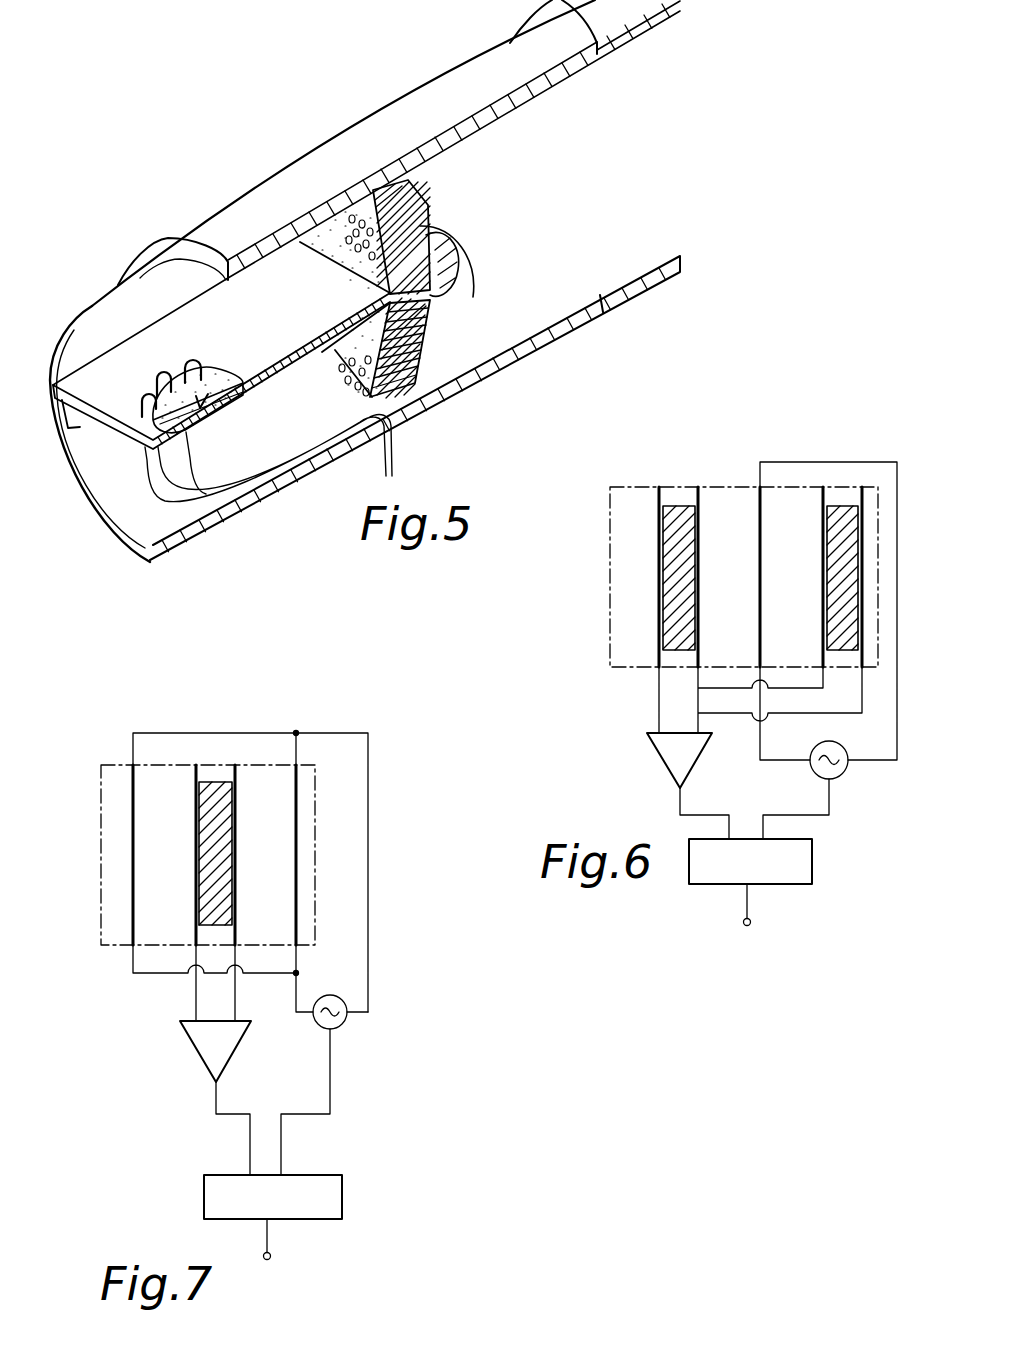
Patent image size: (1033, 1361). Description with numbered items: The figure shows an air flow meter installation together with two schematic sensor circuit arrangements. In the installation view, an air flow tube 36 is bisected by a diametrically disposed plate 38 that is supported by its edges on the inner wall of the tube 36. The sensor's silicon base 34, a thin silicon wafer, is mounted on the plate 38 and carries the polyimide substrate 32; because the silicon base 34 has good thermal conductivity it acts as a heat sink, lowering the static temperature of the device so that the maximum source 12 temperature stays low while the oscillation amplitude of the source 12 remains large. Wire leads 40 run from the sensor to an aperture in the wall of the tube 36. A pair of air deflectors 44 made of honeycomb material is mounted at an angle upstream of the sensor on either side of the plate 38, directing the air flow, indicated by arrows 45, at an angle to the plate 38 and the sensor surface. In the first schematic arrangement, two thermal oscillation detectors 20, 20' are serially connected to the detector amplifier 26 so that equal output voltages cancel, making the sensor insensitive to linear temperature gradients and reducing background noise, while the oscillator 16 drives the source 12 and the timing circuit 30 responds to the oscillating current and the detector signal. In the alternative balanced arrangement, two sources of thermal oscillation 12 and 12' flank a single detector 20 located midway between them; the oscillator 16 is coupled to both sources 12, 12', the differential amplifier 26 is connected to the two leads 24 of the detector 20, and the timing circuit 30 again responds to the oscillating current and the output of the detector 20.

In FIG. 5, the air flow tube 36 is at (288, 180).
In FIG. 5, the plate 38 is at (103, 420).
In FIG. 5, the air deflectors 44 is at (432, 322).
In FIG. 5, the arrows 45 is at (327, 284).
In FIG. 5, the silicon base 34 is at (248, 350).
In FIG. 5, the thermal oscillation detector 20 is at (174, 366).
In FIG. 6, the thermal oscillation detector 20 is at (879, 577).
In FIG. 7, the thermal oscillation detector 20 is at (227, 811).
In FIG. 6, the upstream detector 20' is at (697, 551).
In FIG. 5, the polyimide substrate 32 is at (208, 400).
In FIG. 6, the polyimide substrate 32 is at (610, 552).
In FIG. 7, the polyimide substrate 32 is at (100, 862).
In FIG. 5, the wire leads 40 is at (213, 493).
In FIG. 6, the source 12 is at (785, 577).
In FIG. 7, the source 12 is at (329, 855).
In FIG. 7, the second source of thermal oscillation 12' is at (162, 855).
In FIG. 7, the leads of the detector 24 is at (237, 862).
In FIG. 6, the detector amplifier 26 is at (657, 750).
In FIG. 7, the detector amplifier 26 is at (197, 1051).
In FIG. 6, the oscillator 16 is at (843, 777).
In FIG. 7, the oscillator 16 is at (337, 1032).
In FIG. 6, the timing circuit 30 is at (813, 864).
In FIG. 7, the timing circuit 30 is at (343, 1193).